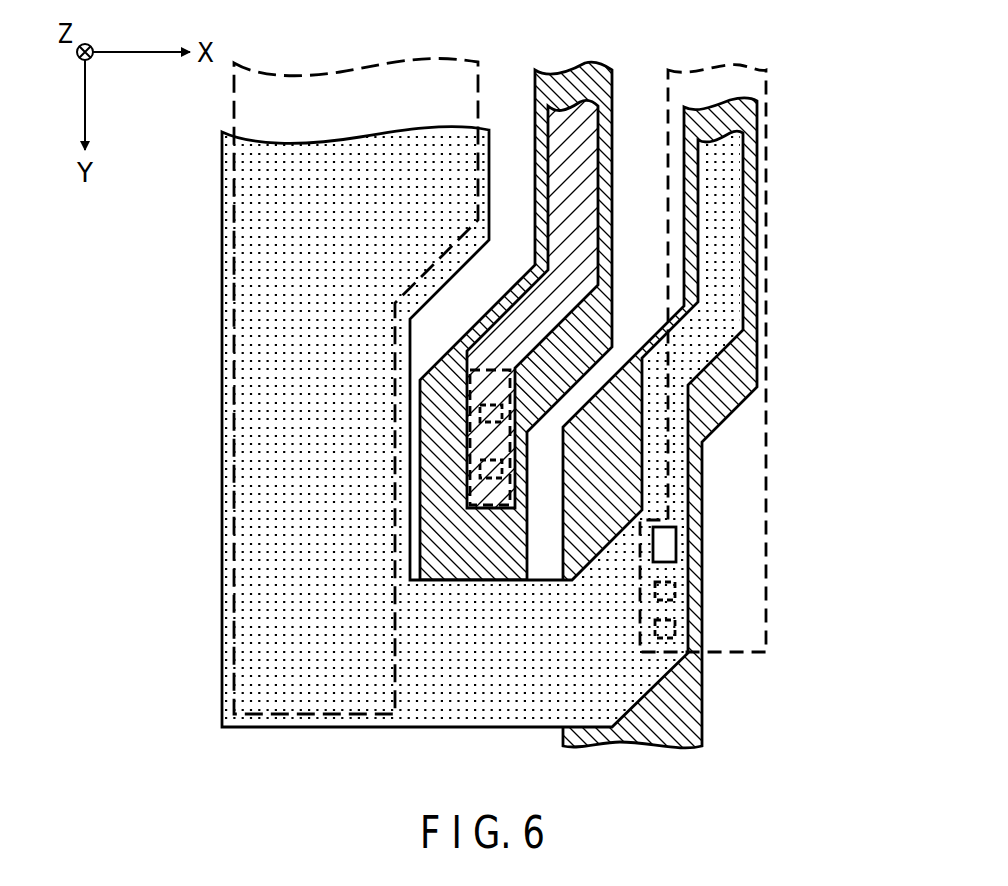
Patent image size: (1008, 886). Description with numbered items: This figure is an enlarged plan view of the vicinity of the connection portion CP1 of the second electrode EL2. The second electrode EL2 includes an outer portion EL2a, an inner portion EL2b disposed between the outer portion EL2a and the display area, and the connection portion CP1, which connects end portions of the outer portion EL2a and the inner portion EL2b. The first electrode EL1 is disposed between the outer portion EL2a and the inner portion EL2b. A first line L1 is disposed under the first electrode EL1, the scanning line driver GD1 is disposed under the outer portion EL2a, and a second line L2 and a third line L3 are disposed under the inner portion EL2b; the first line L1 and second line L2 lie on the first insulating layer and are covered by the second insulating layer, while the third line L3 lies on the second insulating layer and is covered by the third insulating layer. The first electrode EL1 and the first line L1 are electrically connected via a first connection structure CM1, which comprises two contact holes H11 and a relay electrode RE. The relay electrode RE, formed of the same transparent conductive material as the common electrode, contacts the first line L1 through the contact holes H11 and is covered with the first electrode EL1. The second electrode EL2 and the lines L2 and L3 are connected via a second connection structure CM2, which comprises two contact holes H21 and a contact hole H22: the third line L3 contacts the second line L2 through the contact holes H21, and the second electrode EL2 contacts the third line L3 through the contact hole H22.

The scanning line driver GD1 is at (235, 110).
The first electrode EL1 is at (566, 108).
The second electrode EL2 is at (484, 456).
The outer portion EL2a is at (245, 282).
The inner portion EL2b is at (736, 283).
The connection portion CP1 is at (467, 713).
The first line L1 is at (613, 98).
The second line L2 is at (757, 222).
The third line L3 is at (766, 93).
The first connection structure CM1 is at (391, 437).
The second connection structure CM2 is at (767, 582).
The relay electrode RE is at (483, 413).
The contact holes H11 is at (485, 423).
The contact holes H21 is at (676, 593).
The contact hole H22 is at (676, 547).